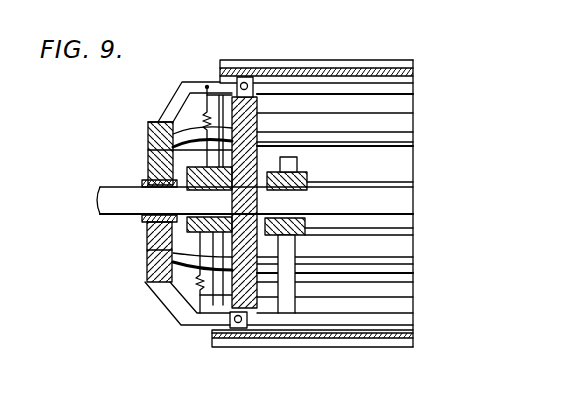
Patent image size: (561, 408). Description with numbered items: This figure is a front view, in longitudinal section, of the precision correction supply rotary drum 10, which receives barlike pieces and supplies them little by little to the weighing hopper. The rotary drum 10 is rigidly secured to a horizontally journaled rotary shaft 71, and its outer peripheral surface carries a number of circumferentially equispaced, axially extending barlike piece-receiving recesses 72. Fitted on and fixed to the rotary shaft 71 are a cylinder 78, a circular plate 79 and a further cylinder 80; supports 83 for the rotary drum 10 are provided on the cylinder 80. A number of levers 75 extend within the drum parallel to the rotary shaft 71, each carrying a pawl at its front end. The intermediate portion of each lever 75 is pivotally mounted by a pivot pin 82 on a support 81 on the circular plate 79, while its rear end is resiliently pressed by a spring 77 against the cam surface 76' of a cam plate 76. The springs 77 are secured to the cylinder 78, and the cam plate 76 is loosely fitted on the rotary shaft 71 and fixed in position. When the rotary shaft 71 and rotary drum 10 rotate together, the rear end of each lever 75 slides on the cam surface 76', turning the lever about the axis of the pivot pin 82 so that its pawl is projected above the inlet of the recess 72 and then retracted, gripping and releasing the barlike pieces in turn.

The rotary drum 10 is at (399, 61).
The rotary shaft 71 is at (100, 197).
The barlike piece-receiving recess 72 is at (364, 44).
The lever 75 is at (172, 97).
The cam plate 76 is at (133, 202).
The cam surface 76' is at (132, 114).
The spring 77 is at (148, 152).
The cylinder 78 is at (187, 219).
The circular plate 79 is at (243, 301).
The cylinder 80 is at (307, 181).
The support 81 is at (253, 83).
The pivot pin 82 is at (250, 73).
The support 83 is at (297, 160).